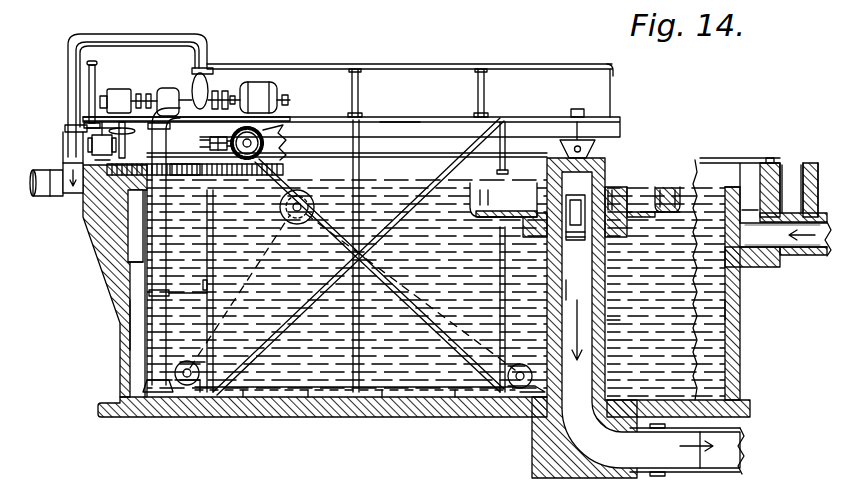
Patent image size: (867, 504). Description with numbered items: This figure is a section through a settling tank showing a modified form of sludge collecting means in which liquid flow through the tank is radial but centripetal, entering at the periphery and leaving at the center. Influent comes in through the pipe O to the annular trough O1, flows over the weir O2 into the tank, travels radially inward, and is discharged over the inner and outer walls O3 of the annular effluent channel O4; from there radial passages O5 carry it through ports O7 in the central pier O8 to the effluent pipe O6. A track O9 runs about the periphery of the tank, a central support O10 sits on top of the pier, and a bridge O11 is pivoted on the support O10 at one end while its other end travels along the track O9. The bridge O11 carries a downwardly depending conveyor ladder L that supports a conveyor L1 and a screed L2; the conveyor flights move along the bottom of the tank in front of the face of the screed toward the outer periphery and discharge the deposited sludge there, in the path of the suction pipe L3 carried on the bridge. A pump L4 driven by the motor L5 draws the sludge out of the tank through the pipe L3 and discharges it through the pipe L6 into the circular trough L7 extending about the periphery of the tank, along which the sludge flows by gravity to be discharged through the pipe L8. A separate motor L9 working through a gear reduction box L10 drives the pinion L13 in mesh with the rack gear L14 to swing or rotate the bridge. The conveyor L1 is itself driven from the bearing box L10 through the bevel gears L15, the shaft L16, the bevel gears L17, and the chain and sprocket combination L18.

The conveyor ladder L is at (260, 347).
The conveyor L1 is at (340, 253).
The screed L2 is at (178, 388).
The suction pipe L3 is at (157, 323).
The pump L4 is at (222, 95).
The motor L5 is at (268, 88).
The discharge pipe L6 is at (128, 34).
The circular trough L7 is at (73, 195).
The sludge discharge pipe L8 is at (40, 170).
The bridge drive motor L9 is at (170, 100).
The gear reduction box L10 is at (125, 95).
The pinion L13 is at (120, 190).
The rack gear L14 is at (255, 185).
The bevel gears L15 is at (125, 150).
The shaft L16 is at (180, 176).
The bevel gears L17 is at (247, 127).
The chain and sprocket combination L18 is at (290, 197).
The influent pipe O is at (808, 247).
The annular trough O1 is at (112, 197).
The weir O2 is at (178, 170).
The inner and outer walls O3 is at (680, 185).
The annular effluent channel O4 is at (485, 217).
The radial passages O5 is at (512, 183).
The effluent pipe O6 is at (590, 285).
The ports O7 is at (598, 205).
The central pier O8 is at (590, 335).
The track O9 is at (97, 165).
The central support O10 is at (573, 130).
The bridge O11 is at (395, 120).